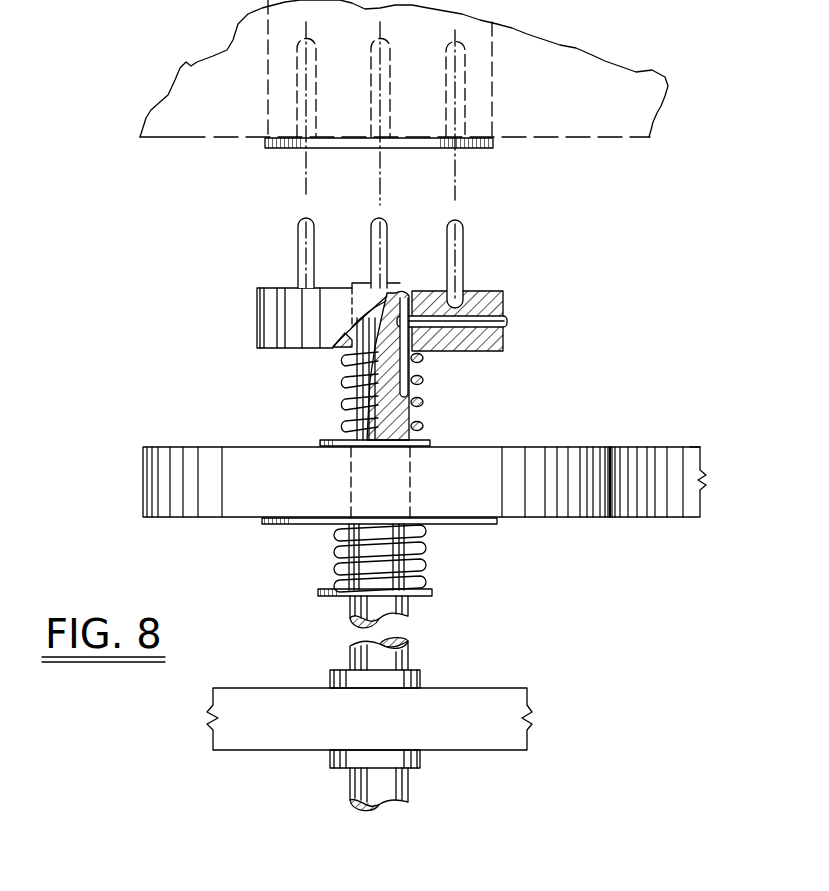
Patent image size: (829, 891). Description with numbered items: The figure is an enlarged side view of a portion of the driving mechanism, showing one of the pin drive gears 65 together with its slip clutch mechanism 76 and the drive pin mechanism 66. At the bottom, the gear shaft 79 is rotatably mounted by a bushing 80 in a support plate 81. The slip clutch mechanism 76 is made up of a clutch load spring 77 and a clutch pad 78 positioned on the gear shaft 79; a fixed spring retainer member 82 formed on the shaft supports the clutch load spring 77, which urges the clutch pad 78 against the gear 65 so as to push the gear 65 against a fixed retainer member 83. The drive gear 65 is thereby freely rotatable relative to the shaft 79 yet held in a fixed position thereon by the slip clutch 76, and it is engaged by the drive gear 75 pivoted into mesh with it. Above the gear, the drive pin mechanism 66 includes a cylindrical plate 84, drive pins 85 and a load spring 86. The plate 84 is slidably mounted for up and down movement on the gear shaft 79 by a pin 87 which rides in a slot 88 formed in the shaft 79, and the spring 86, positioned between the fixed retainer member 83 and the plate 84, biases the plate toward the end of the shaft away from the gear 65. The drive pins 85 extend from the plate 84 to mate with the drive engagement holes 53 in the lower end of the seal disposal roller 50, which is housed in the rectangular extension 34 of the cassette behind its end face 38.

The rectangular extension 34 is at (184, 44).
The end face 38 is at (213, 127).
The seal disposal roller 50 is at (488, 87).
The drive engagement holes 53 is at (463, 147).
The drive pin mechanism 66 is at (249, 265).
The drive pins 85 is at (462, 247).
The cylindrical plate 84 is at (503, 297).
The pin 87 is at (508, 323).
The fixed retainer member 83 is at (428, 440).
The load spring 86 is at (343, 375).
The slot 88 is at (423, 366).
The pin drive gear 65 is at (567, 450).
The drive gear 75 is at (662, 455).
The clutch pad 78 is at (486, 526).
The clutch load spring 77 is at (420, 563).
The slip clutch mechanism 76 is at (292, 555).
The spring retainer member 82 is at (435, 593).
The gear shaft 79 is at (409, 625).
The bushing 80 is at (421, 678).
The support plate 81 is at (477, 740).